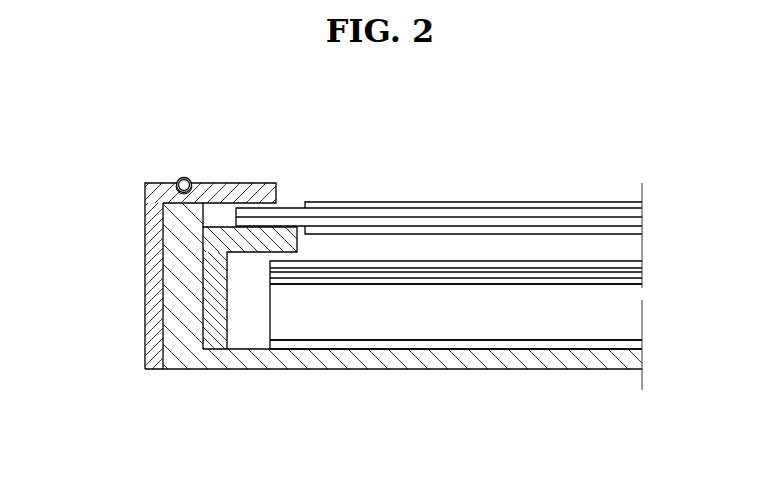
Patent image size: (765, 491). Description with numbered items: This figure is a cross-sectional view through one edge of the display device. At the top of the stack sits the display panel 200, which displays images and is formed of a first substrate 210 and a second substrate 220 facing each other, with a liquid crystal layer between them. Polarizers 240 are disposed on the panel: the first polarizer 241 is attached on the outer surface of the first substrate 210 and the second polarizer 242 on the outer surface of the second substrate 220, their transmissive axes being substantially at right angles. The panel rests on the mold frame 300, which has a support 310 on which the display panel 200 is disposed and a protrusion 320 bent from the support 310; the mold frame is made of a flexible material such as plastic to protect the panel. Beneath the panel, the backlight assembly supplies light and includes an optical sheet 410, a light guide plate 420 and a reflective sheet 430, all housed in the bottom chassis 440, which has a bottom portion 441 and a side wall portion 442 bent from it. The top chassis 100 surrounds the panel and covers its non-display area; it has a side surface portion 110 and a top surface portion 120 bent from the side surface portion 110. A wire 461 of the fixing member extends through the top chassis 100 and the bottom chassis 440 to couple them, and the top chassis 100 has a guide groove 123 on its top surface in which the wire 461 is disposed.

The top chassis 100 is at (150, 276).
The side surface portion 110 is at (155, 247).
The top surface portion 120 is at (221, 200).
The guide groove 123 is at (192, 179).
The wire 461 is at (183, 177).
The display panel 200 is at (439, 166).
The first substrate 210 is at (355, 148).
The second substrate 220 is at (352, 215).
The polarizers 240 is at (473, 170).
The first polarizer 241 is at (497, 148).
The second polarizer 242 is at (493, 206).
The mold frame 300 is at (161, 288).
The support 310 is at (255, 252).
The protrusion 320 is at (218, 320).
The optical sheet 410 is at (648, 262).
The light guide plate 420 is at (632, 318).
The reflective sheet 430 is at (632, 347).
The bottom chassis 440 is at (393, 339).
The bottom portion 441 is at (183, 432).
The side wall portion 442 is at (183, 325).